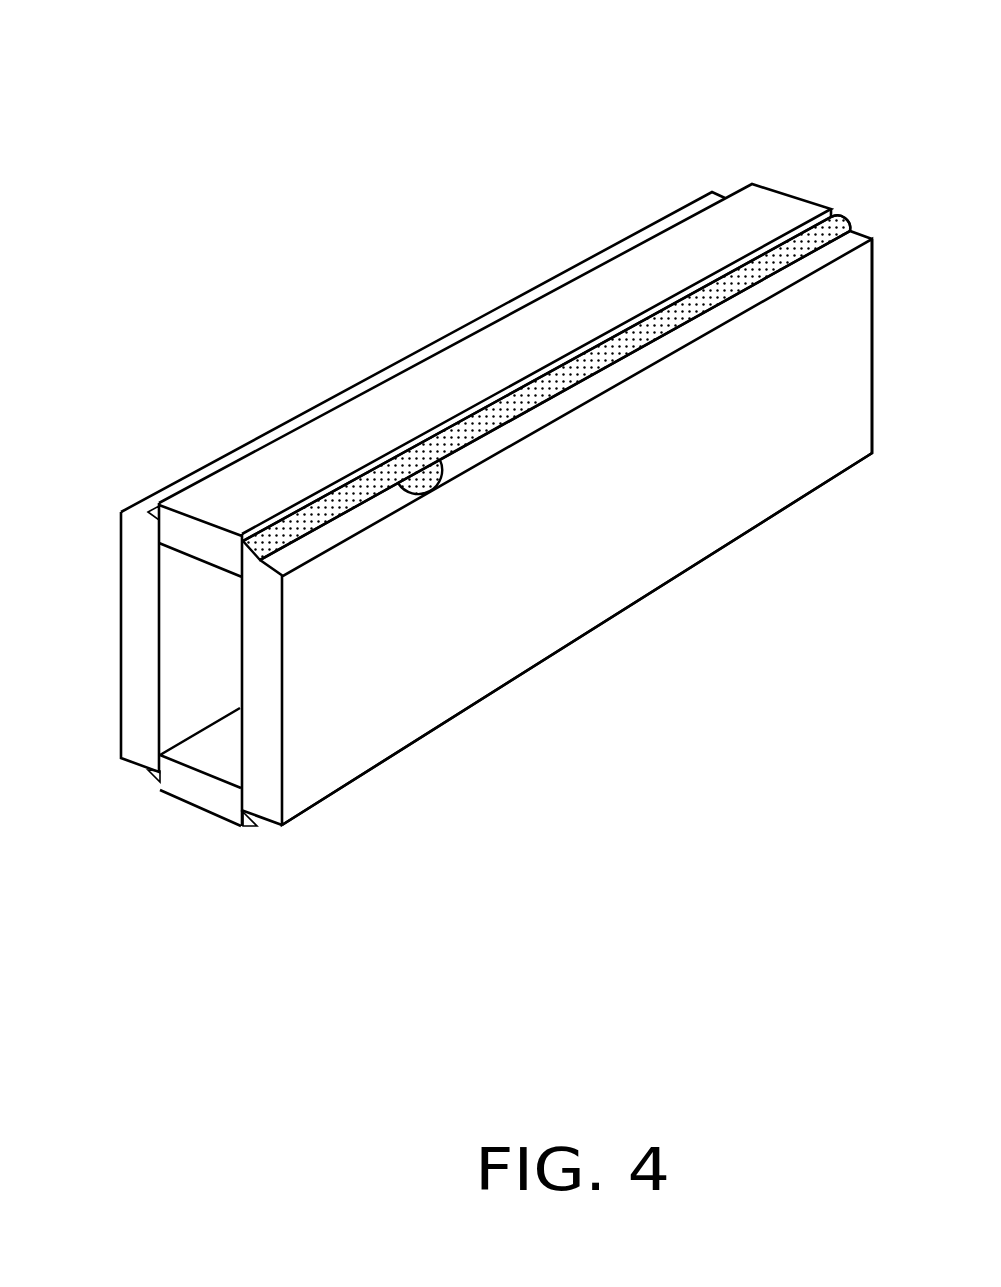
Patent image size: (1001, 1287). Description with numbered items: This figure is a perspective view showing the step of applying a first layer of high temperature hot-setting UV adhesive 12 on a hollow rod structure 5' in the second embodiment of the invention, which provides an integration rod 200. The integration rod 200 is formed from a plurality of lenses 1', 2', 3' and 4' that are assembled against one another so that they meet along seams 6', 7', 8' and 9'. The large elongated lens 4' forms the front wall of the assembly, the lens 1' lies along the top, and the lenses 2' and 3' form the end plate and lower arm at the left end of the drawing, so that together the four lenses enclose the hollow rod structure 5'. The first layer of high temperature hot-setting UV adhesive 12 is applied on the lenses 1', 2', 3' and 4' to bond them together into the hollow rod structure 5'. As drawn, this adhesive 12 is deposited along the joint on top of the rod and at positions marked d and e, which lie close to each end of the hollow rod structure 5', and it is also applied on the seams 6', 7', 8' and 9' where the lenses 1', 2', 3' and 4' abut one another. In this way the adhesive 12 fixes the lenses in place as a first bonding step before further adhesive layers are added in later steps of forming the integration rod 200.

The integration rod 200 is at (815, 95).
The first layer of high temperature hot-setting UV adhesive 12 is at (546, 341).
The lens 1' is at (495, 362).
The seam 8' is at (209, 603).
The seam 9' is at (135, 473).
The lens 2' is at (377, 482).
The seam 6' is at (120, 810).
The lens 3' is at (221, 806).
The seam 7' is at (267, 858).
The lens 4' is at (566, 528).
The hollow rod structure 5' is at (581, 532).
The adhesive application position d is at (426, 500).
The adhesive application position e is at (795, 290).